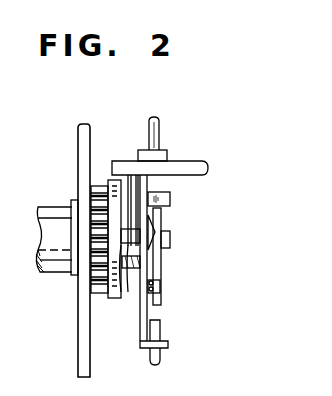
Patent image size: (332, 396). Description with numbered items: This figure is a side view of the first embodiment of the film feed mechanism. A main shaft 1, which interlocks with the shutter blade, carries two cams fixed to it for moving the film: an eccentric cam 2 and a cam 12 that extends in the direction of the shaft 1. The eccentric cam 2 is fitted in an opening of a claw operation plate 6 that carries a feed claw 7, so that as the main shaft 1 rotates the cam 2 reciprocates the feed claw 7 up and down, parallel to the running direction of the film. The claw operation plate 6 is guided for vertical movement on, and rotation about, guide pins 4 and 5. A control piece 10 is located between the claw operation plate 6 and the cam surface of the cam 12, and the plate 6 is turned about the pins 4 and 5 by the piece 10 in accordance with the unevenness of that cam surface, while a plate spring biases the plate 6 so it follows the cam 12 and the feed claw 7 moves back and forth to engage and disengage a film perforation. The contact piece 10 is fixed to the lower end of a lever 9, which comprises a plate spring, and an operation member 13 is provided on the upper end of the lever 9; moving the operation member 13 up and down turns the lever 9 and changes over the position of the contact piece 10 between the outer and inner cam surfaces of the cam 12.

The main shaft 1 is at (170, 242).
The eccentric cam 2 is at (132, 270).
The guide pin 4 is at (161, 131).
The guide pin 5 is at (162, 356).
The claw operation plate 6 is at (140, 340).
The feed claw 7 is at (169, 205).
The lever 9 is at (139, 188).
The control piece 10 is at (121, 236).
The cam 12 is at (121, 291).
The operation member 13 is at (192, 163).